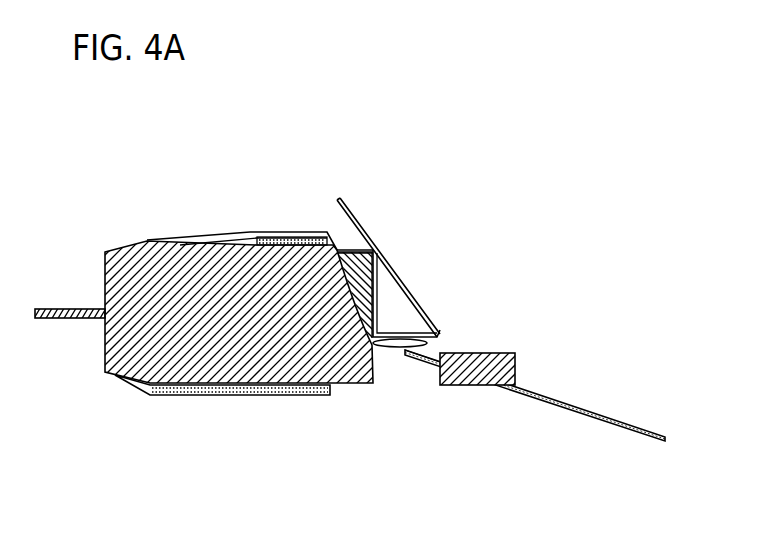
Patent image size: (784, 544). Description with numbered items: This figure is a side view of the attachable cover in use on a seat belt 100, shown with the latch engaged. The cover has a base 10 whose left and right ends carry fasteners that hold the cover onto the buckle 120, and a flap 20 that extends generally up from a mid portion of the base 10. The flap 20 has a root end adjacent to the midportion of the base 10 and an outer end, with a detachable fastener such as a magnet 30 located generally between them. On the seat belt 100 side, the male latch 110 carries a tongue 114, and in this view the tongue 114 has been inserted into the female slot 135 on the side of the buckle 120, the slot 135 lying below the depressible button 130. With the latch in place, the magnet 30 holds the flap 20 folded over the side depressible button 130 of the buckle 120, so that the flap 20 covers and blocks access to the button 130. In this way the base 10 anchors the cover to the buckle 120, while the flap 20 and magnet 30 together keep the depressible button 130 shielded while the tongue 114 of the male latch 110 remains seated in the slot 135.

The base of cover 10 is at (212, 238).
The flap 20 is at (413, 293).
The detachable fastener 30 is at (400, 345).
The seat belt 100 is at (62, 307).
The male latch 110 is at (517, 362).
The tongue 114 is at (425, 362).
The buckle 120 is at (133, 340).
The depressible button 130 is at (363, 273).
The female slot 135 is at (365, 378).